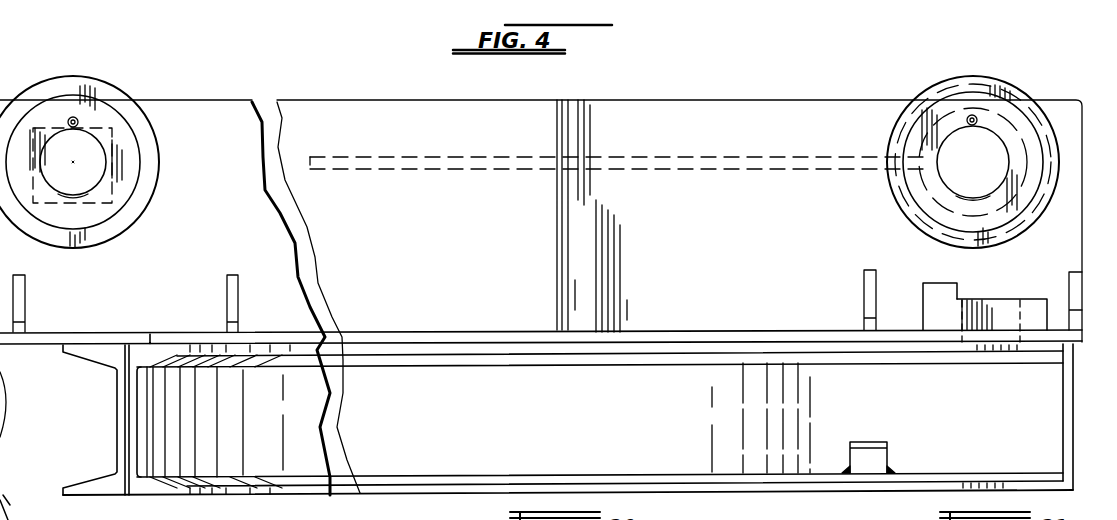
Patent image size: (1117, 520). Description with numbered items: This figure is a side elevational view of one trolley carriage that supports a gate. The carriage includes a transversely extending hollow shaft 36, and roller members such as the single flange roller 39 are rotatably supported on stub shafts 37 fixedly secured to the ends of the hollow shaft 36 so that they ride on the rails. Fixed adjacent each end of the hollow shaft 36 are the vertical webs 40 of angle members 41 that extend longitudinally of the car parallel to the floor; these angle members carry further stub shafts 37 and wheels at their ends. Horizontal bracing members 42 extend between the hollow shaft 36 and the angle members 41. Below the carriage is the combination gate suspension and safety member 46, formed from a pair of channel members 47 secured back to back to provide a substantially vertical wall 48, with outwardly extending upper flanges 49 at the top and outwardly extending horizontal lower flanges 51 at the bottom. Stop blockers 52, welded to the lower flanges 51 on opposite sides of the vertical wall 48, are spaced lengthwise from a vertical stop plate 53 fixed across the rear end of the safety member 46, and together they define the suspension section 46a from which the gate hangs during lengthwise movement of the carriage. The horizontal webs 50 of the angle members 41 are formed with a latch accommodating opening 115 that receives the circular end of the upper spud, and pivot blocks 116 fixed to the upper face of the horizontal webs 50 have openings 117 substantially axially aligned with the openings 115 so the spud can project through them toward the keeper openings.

The hollow shaft 36 is at (1012, 90).
The stub shaft 37 is at (93, 177).
The roller member 39 is at (107, 118).
The vertical web 40 is at (1040, 283).
The angle member 41 is at (383, 100).
The horizontal bracing member 42 is at (735, 155).
The combination gate suspension and safety member 46 is at (367, 498).
The suspension section 46a is at (933, 472).
The channel member 47 is at (117, 405).
The vertical wall 48 is at (130, 442).
The upper flange 49 is at (103, 355).
The horizontal web 50 is at (683, 330).
The lower flange 51 is at (83, 483).
The stop blocker 52 is at (867, 450).
The vertical stop plate 53 is at (1065, 443).
The latch accommodating opening 115 is at (1007, 338).
The pivot block 116 is at (938, 283).
The opening 117 is at (983, 312).